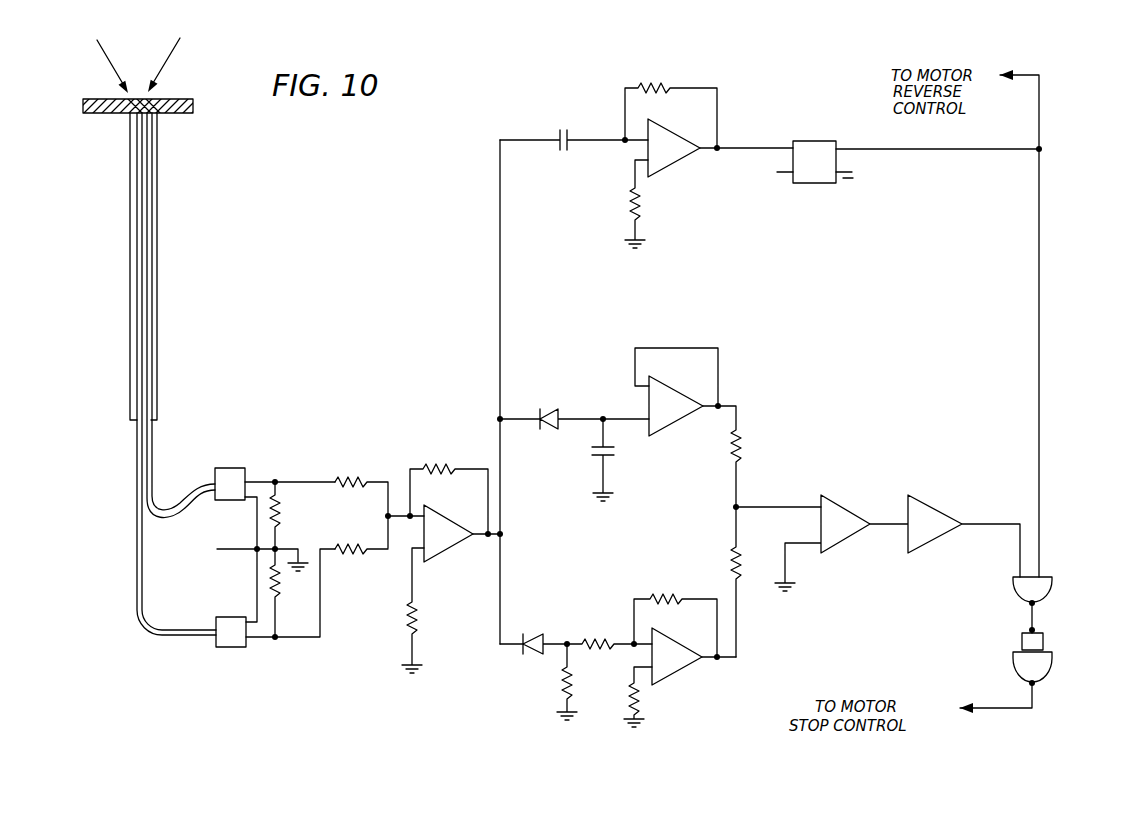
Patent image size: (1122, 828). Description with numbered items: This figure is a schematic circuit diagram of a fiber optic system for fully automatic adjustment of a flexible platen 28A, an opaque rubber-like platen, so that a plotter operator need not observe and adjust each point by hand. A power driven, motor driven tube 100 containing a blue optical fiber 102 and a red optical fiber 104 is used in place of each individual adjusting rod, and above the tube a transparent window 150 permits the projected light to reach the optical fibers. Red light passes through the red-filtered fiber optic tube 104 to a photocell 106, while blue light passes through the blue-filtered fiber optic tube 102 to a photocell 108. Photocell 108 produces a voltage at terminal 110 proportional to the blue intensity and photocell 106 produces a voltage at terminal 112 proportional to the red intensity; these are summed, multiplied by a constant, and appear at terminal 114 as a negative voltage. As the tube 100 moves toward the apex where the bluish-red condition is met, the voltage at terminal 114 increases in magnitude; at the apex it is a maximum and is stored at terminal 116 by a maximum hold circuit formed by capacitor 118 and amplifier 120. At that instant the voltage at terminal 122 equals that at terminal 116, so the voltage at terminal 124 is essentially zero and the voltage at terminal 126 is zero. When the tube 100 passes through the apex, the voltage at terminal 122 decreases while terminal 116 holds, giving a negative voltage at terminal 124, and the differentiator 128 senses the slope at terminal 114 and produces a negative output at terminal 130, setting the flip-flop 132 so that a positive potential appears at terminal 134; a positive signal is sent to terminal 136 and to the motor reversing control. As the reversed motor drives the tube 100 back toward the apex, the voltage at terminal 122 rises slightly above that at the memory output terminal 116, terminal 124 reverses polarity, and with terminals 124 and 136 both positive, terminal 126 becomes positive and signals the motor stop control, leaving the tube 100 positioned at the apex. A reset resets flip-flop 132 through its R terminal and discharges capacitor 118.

The flexible platen 28A is at (173, 102).
The transparent window 150 is at (155, 108).
The motor driven tube 100 is at (137, 254).
The blue optical fiber 102 is at (145, 308).
The red optical fiber 104 is at (142, 344).
The photocell 106 is at (235, 633).
The photocell 108 is at (233, 472).
The terminal 110 is at (277, 480).
The terminal 112 is at (277, 640).
The terminal 114 is at (502, 533).
The terminal 116 is at (720, 404).
The capacitor 118 is at (600, 458).
The amplifier 120 is at (682, 408).
The terminal 122 is at (719, 660).
The terminal 124 is at (1018, 577).
The terminal 126 is at (1030, 683).
The differentiator 128 is at (672, 143).
The terminal 130 is at (720, 146).
The flip-flop 132 is at (822, 176).
The terminal 134 is at (837, 146).
The terminal 136 is at (1052, 575).